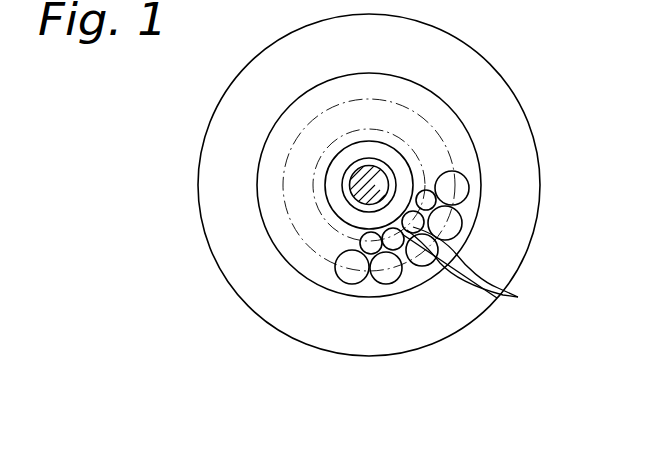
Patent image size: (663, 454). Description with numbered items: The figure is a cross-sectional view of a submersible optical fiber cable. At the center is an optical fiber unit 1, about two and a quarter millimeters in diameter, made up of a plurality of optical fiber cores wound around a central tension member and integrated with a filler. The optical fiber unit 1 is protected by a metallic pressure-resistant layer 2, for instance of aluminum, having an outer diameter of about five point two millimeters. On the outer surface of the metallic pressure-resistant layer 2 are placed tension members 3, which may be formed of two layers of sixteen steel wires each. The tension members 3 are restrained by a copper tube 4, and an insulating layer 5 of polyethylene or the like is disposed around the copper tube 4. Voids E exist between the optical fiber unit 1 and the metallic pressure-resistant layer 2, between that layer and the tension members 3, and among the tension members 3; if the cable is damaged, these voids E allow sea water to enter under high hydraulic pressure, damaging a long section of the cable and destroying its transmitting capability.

The optical fiber unit 1 is at (432, 150).
The metallic pressure-resistant layer 2 is at (447, 165).
The tension members 3 is at (456, 224).
The copper tube 4 is at (425, 185).
The insulating layer 5 is at (388, 185).
The voids E is at (461, 176).